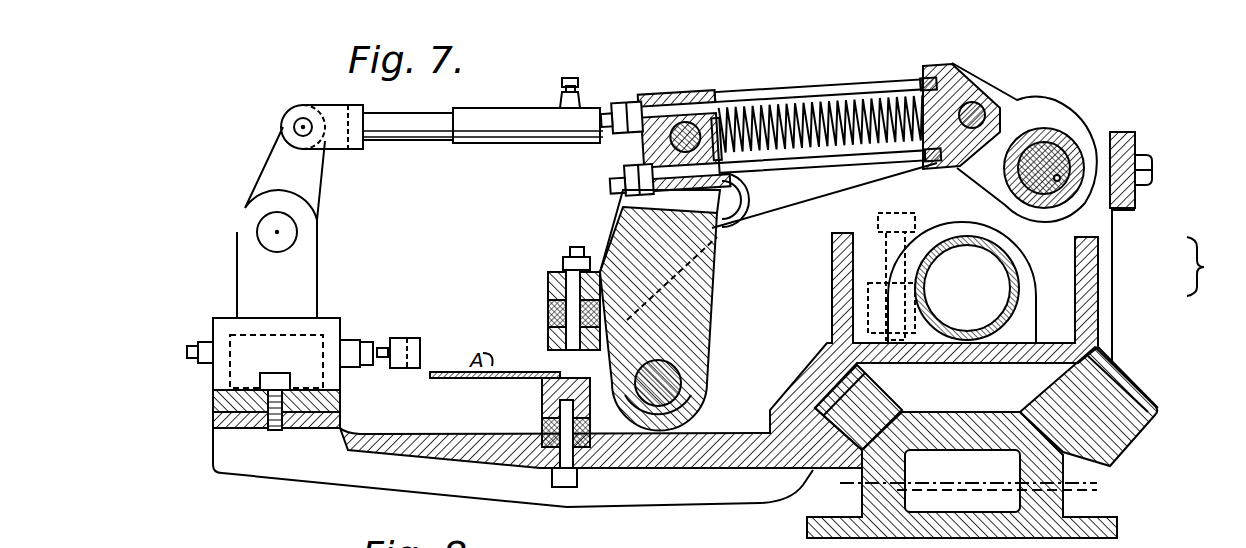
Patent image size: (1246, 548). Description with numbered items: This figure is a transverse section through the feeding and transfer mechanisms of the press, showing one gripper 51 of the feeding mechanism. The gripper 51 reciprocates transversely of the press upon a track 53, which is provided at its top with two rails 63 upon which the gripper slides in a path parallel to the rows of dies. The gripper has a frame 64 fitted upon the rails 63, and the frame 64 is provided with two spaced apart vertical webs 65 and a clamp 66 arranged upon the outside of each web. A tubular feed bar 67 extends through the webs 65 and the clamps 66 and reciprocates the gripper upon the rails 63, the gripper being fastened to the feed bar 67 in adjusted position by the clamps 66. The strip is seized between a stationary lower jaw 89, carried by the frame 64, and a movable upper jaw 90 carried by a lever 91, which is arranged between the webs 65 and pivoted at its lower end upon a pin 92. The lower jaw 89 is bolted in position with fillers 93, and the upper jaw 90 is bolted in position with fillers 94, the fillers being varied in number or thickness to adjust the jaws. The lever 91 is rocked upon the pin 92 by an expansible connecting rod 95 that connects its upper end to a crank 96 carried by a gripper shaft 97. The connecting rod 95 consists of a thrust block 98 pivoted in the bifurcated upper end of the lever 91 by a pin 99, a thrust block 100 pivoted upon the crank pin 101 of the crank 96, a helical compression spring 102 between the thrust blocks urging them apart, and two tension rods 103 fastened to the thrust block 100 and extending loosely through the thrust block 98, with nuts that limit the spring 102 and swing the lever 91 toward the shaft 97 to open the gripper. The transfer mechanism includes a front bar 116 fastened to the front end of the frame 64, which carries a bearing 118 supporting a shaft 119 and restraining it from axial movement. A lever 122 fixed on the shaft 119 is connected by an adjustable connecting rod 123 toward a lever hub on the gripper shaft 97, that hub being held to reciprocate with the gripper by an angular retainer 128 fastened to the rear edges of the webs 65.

The gripper 51 is at (1210, 266).
The track 53 is at (1067, 500).
The rails 63 is at (885, 391).
The frame 64 is at (353, 487).
The vertical webs 65 is at (1100, 230).
The clamp 66 is at (870, 230).
The tubular feed bar 67 is at (1004, 277).
The lower jaw 89 is at (541, 398).
The upper jaw 90 is at (547, 346).
The lever 91 is at (703, 292).
The pin 92 is at (678, 384).
The fillers 93 is at (540, 430).
The fillers 94 is at (548, 308).
The expansible connecting rod 95 is at (824, 106).
The crank 96 is at (1022, 113).
The gripper shaft 97 is at (1042, 150).
The thrust block 98 is at (683, 123).
The pin 99 is at (634, 148).
The thrust block 100 is at (937, 64).
The crank pin 101 is at (977, 104).
The helical compression spring 102 is at (820, 105).
The tension rods 103 is at (597, 141).
The front bar 116 is at (218, 377).
The bearing 118 is at (252, 282).
The shaft 119 is at (273, 230).
The lever 122 is at (312, 182).
The adjustable connecting rod 123 is at (483, 135).
The angular retainer 128 is at (1132, 195).